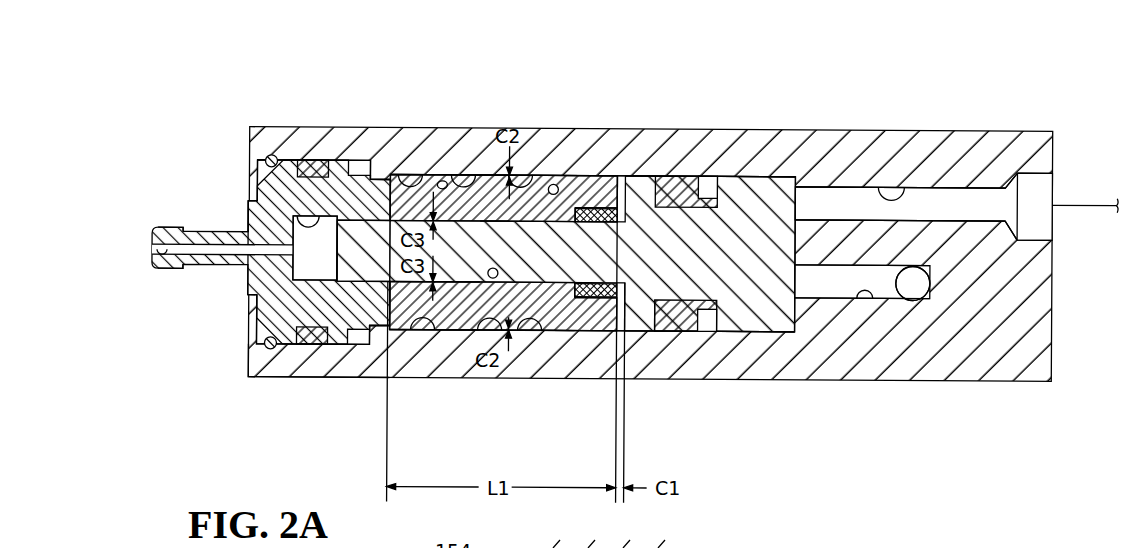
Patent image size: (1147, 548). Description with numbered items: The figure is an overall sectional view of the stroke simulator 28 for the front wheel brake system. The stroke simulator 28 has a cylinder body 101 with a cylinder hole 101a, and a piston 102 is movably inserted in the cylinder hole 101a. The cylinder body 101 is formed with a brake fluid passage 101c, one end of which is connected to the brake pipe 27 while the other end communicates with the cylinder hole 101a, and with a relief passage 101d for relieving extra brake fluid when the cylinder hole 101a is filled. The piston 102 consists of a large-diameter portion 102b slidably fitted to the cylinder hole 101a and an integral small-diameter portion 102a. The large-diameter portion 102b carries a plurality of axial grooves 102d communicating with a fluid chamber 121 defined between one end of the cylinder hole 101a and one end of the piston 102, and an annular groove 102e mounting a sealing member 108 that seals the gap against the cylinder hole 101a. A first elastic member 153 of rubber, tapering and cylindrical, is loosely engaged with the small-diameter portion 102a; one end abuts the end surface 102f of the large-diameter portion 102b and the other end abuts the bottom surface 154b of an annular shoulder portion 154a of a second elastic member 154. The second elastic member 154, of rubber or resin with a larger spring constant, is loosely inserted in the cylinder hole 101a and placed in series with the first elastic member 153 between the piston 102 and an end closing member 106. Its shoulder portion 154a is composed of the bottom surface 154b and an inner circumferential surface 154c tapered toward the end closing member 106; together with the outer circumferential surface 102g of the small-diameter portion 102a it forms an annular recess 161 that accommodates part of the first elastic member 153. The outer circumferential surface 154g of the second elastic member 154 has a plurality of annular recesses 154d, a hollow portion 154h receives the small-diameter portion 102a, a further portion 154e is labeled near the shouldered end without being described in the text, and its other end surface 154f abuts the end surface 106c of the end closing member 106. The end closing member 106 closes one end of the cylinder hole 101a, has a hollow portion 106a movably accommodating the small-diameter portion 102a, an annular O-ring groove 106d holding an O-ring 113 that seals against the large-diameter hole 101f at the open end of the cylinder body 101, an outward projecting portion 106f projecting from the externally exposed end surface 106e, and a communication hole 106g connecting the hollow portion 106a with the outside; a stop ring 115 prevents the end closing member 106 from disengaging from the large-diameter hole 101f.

The cylinder body 101 is at (987, 131).
The cylinder hole 101a is at (553, 175).
The brake fluid passage 101c is at (892, 186).
The relief passage 101d is at (866, 303).
The large-diameter hole 101f is at (250, 320).
The piston 102 is at (732, 225).
The small-diameter portion 102a is at (432, 287).
The large-diameter portion 102b is at (642, 200).
The axial grooves 102d is at (775, 333).
The annular groove 102e is at (666, 333).
The end surface 102f is at (629, 325).
The outer circumferential surface 102g is at (494, 200).
The end closing member 106 is at (345, 195).
The hollow portion 106a is at (278, 157).
The end surface 106c is at (386, 330).
The annular O-ring groove 106d is at (300, 347).
The end surface 106e is at (248, 205).
The outward projecting portion 106f is at (215, 232).
The communication hole 106g is at (152, 249).
The sealing member 108 is at (690, 180).
The O-ring 113 is at (315, 162).
The stop ring 115 is at (262, 348).
The fluid chamber 121 is at (802, 209).
The first elastic member 153 is at (618, 215).
The second elastic member 154 is at (390, 200).
The annular shoulder portion 154a is at (612, 186).
The bottom surface 154b is at (552, 332).
The inner circumferential surface 154c is at (582, 205).
The annular recesses 154d is at (521, 182).
The sleeve end portion 154e is at (598, 300).
The other end surface 154f is at (340, 345).
The outer circumferential surface 154g is at (441, 188).
The hollow portion 154h is at (456, 332).
The annular recess 161 is at (577, 294).
The brake pipe 27 is at (1084, 202).
The stroke simulator 28 is at (207, 92).